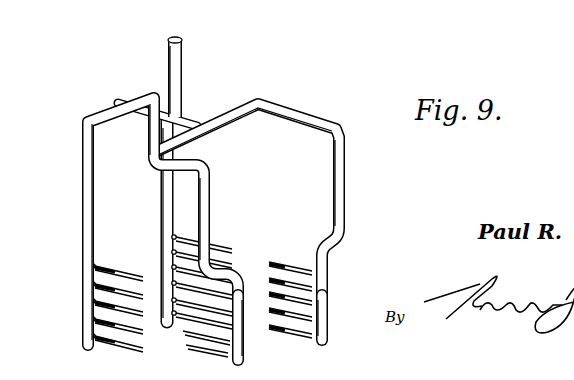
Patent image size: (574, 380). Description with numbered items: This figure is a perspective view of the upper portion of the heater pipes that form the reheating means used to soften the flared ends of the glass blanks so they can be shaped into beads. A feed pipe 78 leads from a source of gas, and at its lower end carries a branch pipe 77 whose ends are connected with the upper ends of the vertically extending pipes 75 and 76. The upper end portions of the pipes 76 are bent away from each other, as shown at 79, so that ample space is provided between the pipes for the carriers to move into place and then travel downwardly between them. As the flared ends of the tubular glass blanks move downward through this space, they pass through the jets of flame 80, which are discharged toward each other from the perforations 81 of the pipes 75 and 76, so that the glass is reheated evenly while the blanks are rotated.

The pipe 75 is at (163, 183).
The pipe 76 is at (320, 323).
The branch pipe 77 is at (187, 117).
The feed pipe 78 is at (174, 70).
The bent upper end portions 79 is at (207, 212).
The jets of flame 80 is at (125, 290).
The perforations 81 is at (171, 237).